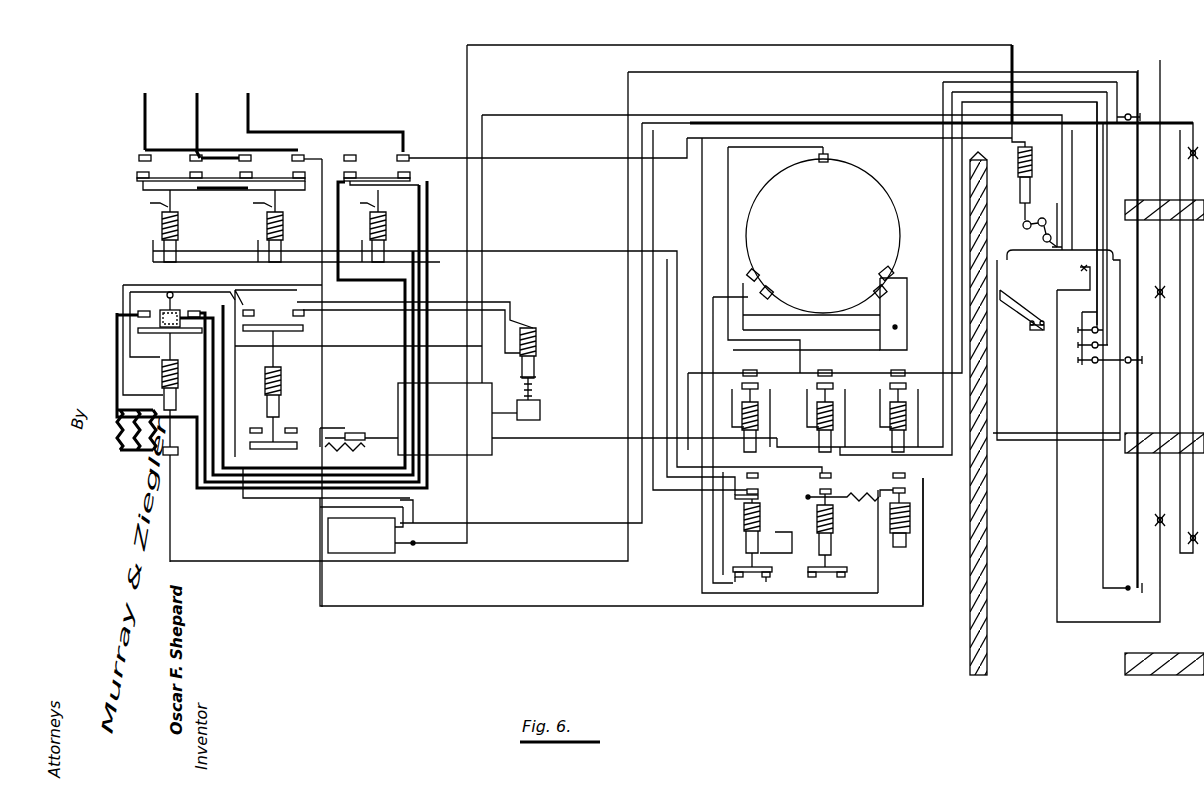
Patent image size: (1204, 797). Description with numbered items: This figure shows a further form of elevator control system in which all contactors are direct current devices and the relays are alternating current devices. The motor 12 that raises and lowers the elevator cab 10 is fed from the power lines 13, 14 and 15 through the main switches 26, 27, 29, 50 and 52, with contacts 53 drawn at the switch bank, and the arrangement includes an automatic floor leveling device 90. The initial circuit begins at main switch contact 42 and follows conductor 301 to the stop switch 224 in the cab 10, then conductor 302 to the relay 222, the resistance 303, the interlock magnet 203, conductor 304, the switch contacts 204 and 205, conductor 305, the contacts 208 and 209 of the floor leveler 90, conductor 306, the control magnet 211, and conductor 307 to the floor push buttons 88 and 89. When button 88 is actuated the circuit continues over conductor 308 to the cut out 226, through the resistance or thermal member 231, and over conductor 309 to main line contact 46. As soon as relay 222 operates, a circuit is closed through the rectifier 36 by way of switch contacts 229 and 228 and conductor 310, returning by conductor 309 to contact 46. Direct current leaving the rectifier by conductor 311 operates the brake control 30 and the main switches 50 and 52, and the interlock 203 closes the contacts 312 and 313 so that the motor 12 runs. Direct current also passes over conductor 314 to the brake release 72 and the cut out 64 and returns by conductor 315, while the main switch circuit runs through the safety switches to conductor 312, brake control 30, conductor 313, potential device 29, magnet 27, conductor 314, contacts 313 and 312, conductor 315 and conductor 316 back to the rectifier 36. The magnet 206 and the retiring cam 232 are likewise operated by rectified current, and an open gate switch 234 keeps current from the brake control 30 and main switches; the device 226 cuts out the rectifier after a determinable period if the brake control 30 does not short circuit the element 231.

The elevator cab 10 is at (1017, 434).
The motor 12 is at (492, 452).
The power line 13 is at (145, 111).
The power line 14 is at (197, 111).
The power line 15 is at (248, 111).
The main switch 26 is at (162, 227).
The up switch 27 is at (268, 227).
The potential switch 29 is at (370, 227).
The brake control switch 30 is at (278, 400).
The rectifier 36 is at (370, 558).
The main line contact 42 is at (409, 156).
The main line contact 46 is at (304, 158).
The main switch 50 is at (381, 169).
The main switch 52 is at (272, 166).
The contact 53 is at (221, 172).
The resistance cut out device 64 is at (117, 333).
The brake release 72 is at (538, 333).
The floor push button 88 is at (1082, 313).
The floor push button 89 is at (1127, 113).
The automatic floor leveling device 90 is at (820, 260).
The interlock magnet 203 is at (834, 522).
The switch contact 204 is at (770, 578).
The switch contact 205 is at (738, 578).
The magnet 206 is at (762, 512).
The contact of floor leveler 208 is at (876, 291).
The contact of floor leveler 209 is at (882, 272).
The control magnet 211 is at (766, 436).
The relay 222 is at (910, 518).
The stop switch 224 is at (1037, 332).
The thermal cut out device 226 is at (352, 433).
The switch contact 228 is at (905, 476).
The switch contact 229 is at (905, 491).
The thermal member 231 is at (362, 448).
The retiring cam 232 is at (1034, 167).
The gate switch 234 is at (1080, 267).
The conductor 301 is at (536, 160).
The conductor 302 is at (702, 222).
The resistance 303 is at (864, 496).
The conductor 304 is at (777, 532).
The conductor 305 is at (824, 296).
The conductor 306 is at (908, 312).
The conductor 307 is at (943, 245).
The conductor 308 is at (588, 438).
The conductor 309 is at (323, 378).
The conductor 310 is at (923, 547).
The conductor 311 is at (567, 45).
The contact 312 is at (560, 108).
The contact 313 is at (307, 281).
The conductor 314 is at (507, 250).
The conductor 315 is at (267, 500).
The conductor 316 is at (642, 188).